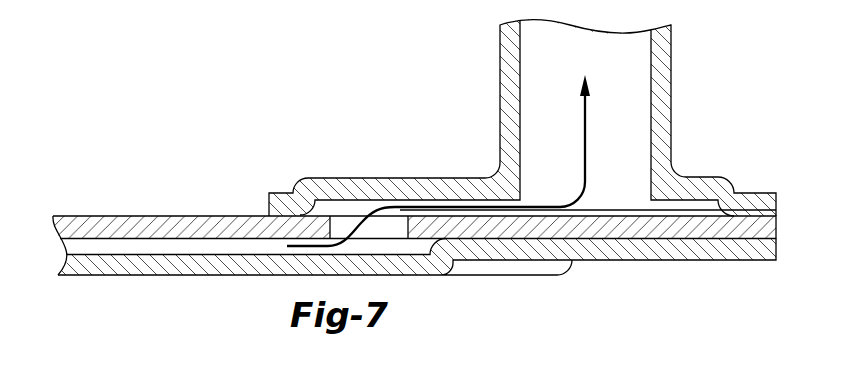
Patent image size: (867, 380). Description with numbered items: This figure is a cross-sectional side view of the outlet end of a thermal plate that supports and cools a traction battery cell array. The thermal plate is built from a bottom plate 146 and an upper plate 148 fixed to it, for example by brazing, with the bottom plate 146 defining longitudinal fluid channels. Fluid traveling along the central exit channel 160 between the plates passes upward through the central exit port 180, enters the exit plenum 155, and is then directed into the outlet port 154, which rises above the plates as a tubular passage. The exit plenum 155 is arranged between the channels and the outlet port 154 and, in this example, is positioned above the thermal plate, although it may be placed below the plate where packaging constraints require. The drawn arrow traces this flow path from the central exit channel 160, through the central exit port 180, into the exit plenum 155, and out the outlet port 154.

The bottom plate 146 is at (108, 267).
The upper plate 148 is at (168, 228).
The outlet port 154 is at (657, 65).
The exit plenum 155 is at (683, 208).
The central exit channel 160 is at (170, 247).
The central exit port 180 is at (410, 228).